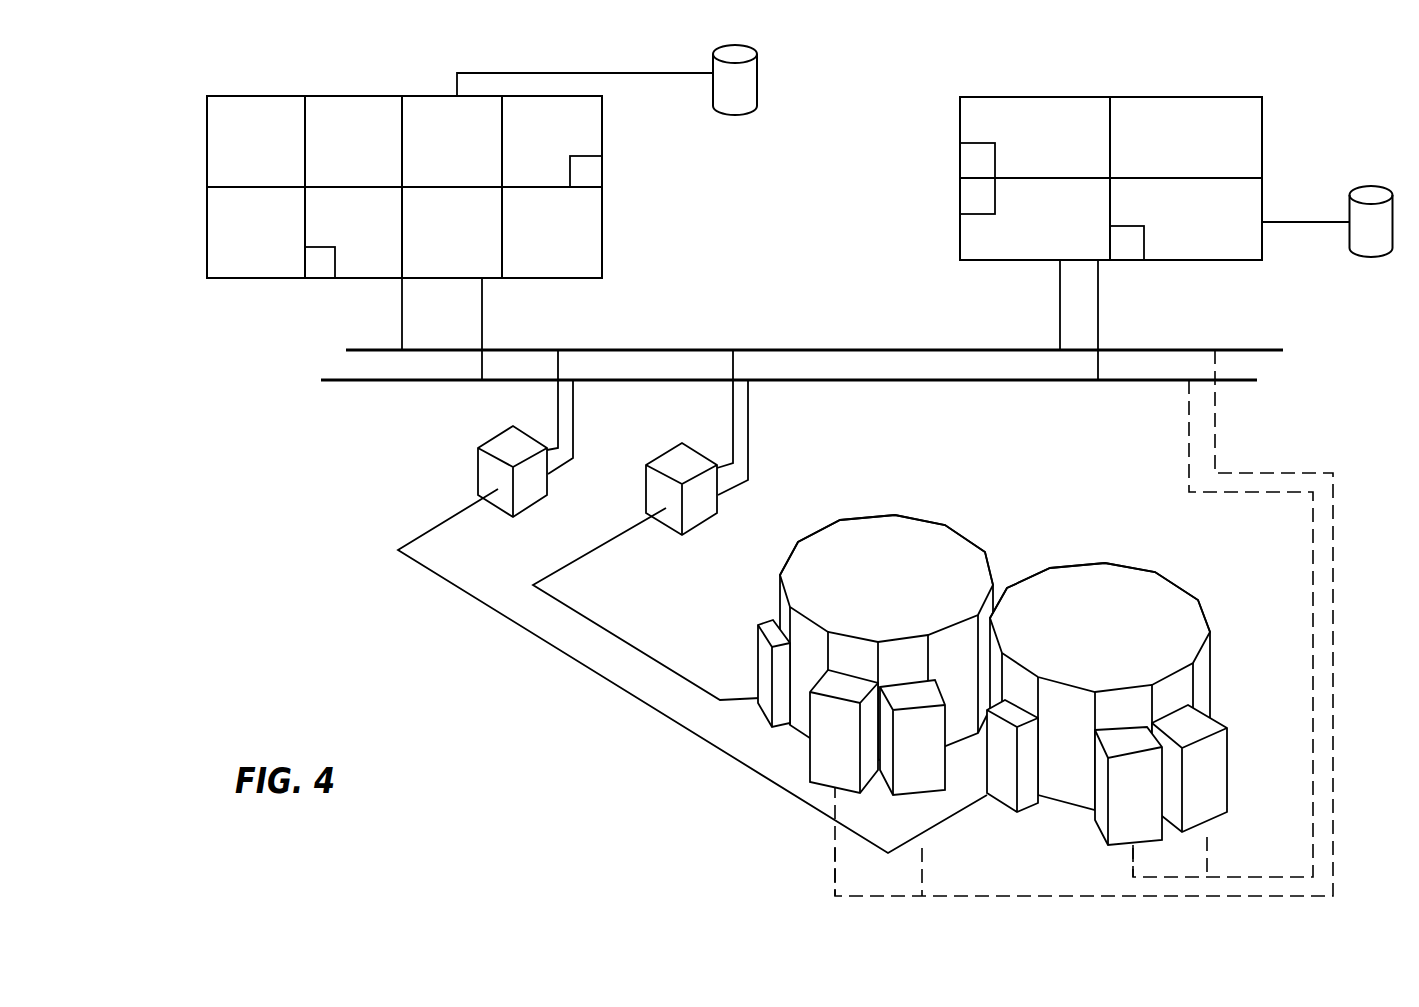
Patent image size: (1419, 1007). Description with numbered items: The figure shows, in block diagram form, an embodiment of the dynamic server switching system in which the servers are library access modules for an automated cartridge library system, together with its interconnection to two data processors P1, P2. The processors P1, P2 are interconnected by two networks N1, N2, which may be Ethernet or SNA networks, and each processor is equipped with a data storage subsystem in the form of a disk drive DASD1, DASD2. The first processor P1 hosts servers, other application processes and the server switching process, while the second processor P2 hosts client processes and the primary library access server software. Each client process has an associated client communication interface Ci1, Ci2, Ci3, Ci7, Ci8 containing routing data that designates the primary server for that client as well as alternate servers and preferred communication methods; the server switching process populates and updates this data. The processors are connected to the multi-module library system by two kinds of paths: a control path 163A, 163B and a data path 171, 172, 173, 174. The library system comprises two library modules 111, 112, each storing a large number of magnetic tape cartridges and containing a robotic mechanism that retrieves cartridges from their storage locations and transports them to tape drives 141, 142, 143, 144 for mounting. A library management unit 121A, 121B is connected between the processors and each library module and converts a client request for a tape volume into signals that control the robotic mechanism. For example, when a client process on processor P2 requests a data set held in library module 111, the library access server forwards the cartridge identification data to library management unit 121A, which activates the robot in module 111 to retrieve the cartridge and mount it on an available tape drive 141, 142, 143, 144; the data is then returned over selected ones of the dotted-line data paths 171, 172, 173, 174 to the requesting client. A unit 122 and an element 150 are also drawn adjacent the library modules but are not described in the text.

The processor P1 is at (639, 246).
The processor P2 is at (1297, 140).
The client communication interface Ci1 is at (967, 158).
The client communication interface Ci2 is at (965, 192).
The client communication interface Ci3 is at (1128, 250).
The client communication interface Ci7 is at (319, 267).
The client communication interface Ci8 is at (602, 167).
The disk drive DASD1 is at (752, 92).
The disk drive DASD2 is at (1378, 240).
The network N1 is at (1270, 352).
The network N2 is at (1235, 383).
The library module 111 is at (912, 520).
The library module 112 is at (1145, 568).
The library management unit 121A is at (485, 473).
The library management unit 121B is at (697, 503).
The control unit 122 is at (760, 660).
The tape drive 141 is at (835, 896).
The tape drive 142 is at (922, 896).
The tape drive 143 is at (1133, 877).
The tape drive 144 is at (1207, 877).
The pass-through port 150 is at (995, 587).
The control path 163A is at (532, 633).
The control path 163B is at (575, 608).
The data path 171 is at (833, 848).
The data path 172 is at (922, 855).
The data path 173 is at (1133, 855).
The data path 174 is at (1207, 837).